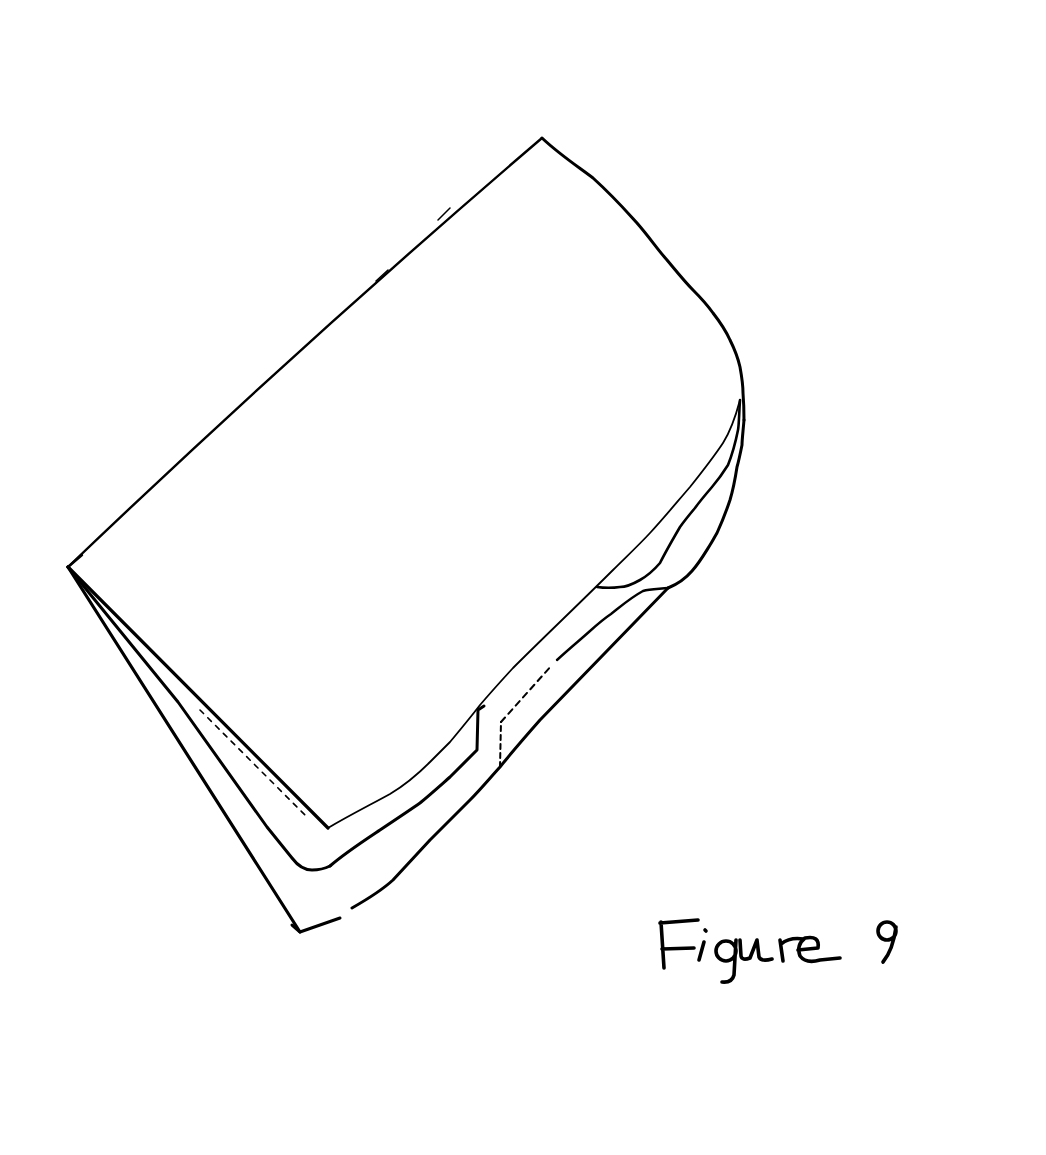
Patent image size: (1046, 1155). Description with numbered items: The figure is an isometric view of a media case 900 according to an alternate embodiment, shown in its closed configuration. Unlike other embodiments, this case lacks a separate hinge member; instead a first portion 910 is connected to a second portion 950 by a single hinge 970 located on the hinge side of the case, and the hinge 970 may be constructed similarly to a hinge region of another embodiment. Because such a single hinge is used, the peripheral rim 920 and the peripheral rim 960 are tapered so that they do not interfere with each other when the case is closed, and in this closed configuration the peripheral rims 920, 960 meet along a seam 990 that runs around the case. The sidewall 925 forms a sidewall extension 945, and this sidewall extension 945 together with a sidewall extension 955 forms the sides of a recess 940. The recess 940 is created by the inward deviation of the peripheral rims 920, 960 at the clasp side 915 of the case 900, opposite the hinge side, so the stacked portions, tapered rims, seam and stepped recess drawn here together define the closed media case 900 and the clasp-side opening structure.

The media case 900 is at (122, 158).
The first portion 910 is at (215, 748).
The clasp side 915 is at (718, 627).
The peripheral rim 920 is at (373, 210).
The sidewall 925 is at (620, 265).
The recess 940 is at (583, 632).
The sidewall extension 945 is at (528, 648).
The second portion 950 is at (275, 868).
The sidewall extension 955 is at (668, 588).
The peripheral rim 960 is at (713, 500).
The hinge 970 is at (543, 133).
The seam 990 is at (241, 798).